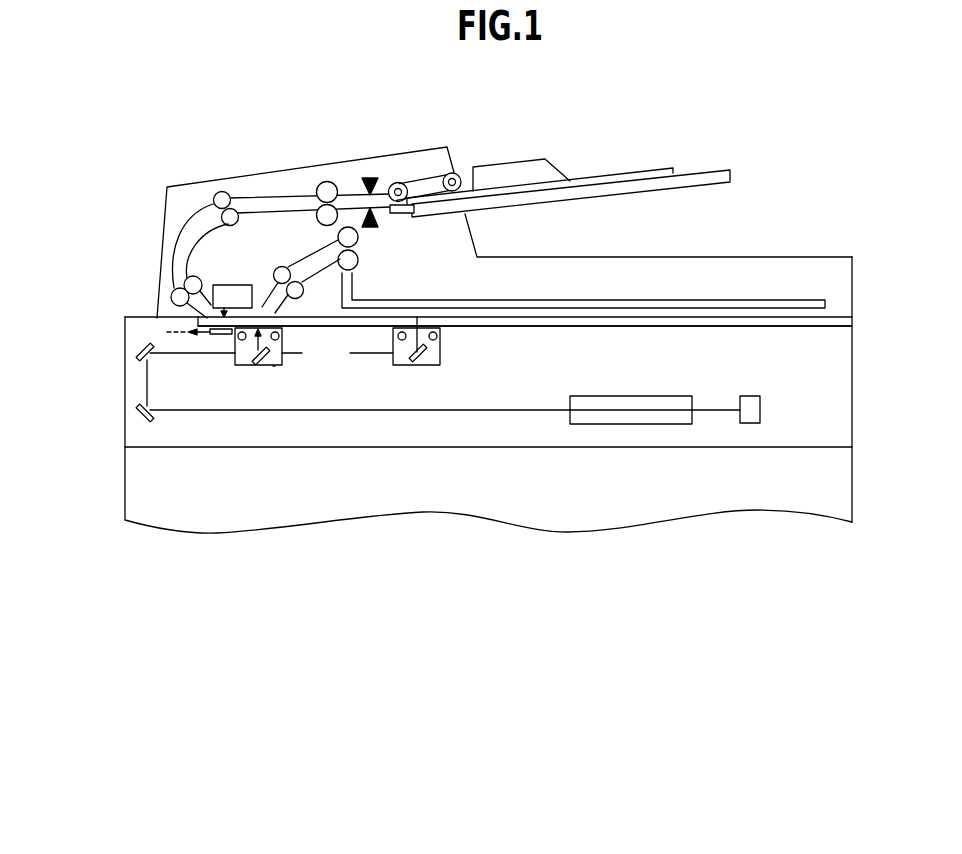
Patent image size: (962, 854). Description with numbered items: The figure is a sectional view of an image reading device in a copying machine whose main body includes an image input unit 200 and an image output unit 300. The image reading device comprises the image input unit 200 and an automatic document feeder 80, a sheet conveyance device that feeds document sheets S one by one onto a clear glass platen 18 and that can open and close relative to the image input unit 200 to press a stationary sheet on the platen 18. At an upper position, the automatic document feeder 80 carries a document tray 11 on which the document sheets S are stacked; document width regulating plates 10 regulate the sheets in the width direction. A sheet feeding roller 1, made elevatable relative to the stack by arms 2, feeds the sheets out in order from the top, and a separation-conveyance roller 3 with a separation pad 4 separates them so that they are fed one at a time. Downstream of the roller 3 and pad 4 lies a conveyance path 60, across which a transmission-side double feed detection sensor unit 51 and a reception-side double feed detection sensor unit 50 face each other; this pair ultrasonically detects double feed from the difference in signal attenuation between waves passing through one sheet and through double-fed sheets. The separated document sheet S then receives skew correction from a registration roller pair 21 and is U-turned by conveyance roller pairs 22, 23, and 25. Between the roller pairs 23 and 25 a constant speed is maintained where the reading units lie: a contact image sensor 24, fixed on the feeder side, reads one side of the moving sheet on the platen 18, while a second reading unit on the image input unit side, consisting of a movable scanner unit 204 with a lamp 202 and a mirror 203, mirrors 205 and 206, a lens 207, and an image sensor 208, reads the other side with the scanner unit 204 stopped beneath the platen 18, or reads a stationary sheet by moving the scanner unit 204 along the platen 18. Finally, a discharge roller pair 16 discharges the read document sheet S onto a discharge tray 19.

The sheet feeding roller 1 is at (453, 173).
The arms 2 is at (418, 184).
The separation-conveyance roller 3 is at (398, 182).
The separation pad 4 is at (403, 215).
The document width regulating plates 10 is at (512, 158).
The document tray 11 is at (696, 174).
The discharge roller pair 16 is at (355, 263).
The platen 18 is at (805, 328).
The discharge tray 19 is at (635, 299).
The registration roller pair 21 is at (322, 182).
The conveyance roller pair 22 is at (222, 191).
The conveyance roller pair 23 is at (170, 297).
The contact image sensor 24 is at (228, 290).
The conveyance roller pair 25 is at (300, 297).
The reception-side double feed detection sensor unit 50 is at (370, 177).
The transmission-side double feed detection sensor unit 51 is at (373, 228).
The conveyance path 60 is at (352, 203).
The automatic document feeder 80 is at (733, 147).
The image input unit 200 is at (750, 462).
The lamp 202 is at (295, 341).
The mirror 203 is at (263, 366).
The scanner unit 204 is at (274, 366).
The mirror 205 is at (138, 349).
The mirror 206 is at (138, 420).
The lens 207 is at (622, 396).
The image sensor 208 is at (751, 396).
The image output unit 300 is at (865, 485).
The document sheet S is at (610, 175).